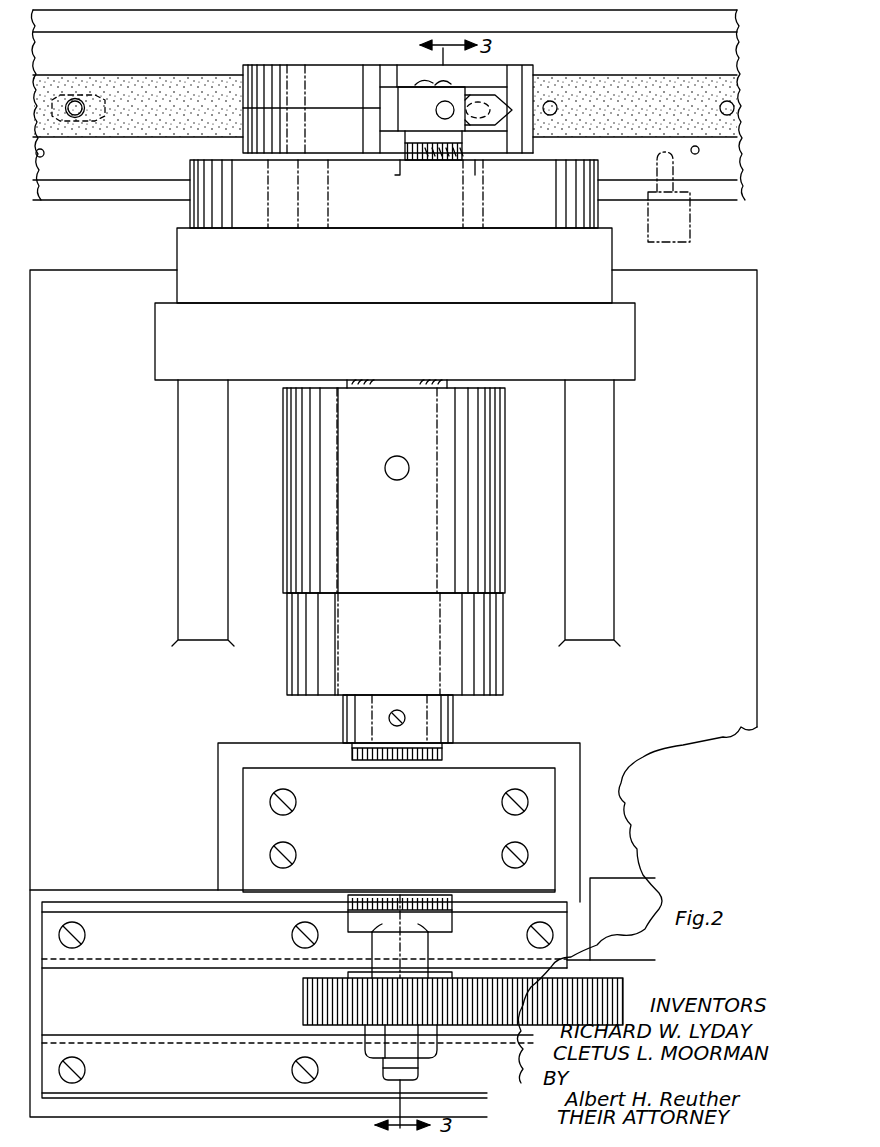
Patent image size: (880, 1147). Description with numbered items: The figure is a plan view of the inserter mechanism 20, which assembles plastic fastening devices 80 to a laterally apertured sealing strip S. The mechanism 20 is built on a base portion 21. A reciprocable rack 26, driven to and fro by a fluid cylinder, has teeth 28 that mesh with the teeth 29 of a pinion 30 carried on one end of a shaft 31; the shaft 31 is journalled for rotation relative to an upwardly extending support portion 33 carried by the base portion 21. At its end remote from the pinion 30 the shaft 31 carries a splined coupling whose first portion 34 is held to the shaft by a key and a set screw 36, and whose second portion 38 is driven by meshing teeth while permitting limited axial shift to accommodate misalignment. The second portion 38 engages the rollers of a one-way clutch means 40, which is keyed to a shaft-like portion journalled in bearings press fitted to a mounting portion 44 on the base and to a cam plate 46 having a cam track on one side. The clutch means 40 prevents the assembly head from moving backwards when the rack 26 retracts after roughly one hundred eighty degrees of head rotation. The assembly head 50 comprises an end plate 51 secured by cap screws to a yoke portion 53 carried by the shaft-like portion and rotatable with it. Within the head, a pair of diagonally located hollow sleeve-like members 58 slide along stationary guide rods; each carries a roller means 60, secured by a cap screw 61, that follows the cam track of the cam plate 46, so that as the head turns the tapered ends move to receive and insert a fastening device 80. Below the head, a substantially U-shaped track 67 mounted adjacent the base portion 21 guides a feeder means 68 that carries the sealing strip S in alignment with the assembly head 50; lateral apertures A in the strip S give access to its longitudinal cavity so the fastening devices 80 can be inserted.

The mechanism 20 is at (730, 750).
The base portion 21 is at (637, 886).
The rack 26 is at (655, 966).
The teeth 28 is at (619, 973).
The teeth 29 is at (303, 1000).
The pinion 30 is at (332, 1025).
The shaft 31 is at (430, 948).
The support portion 33 is at (545, 827).
The first portion 34 is at (453, 719).
The set screw 36 is at (397, 708).
The second portion 38 is at (498, 674).
The one-way clutch means 40 is at (500, 513).
The mounting portion 44 is at (627, 345).
The cam plate 46 is at (190, 220).
The assembly head 50 is at (283, 72).
The end plate 51 is at (315, 70).
The yoke portion 53 is at (333, 146).
The sleeve-like members 58 is at (388, 70).
The roller means 60 is at (432, 162).
The cap screws 61 is at (420, 93).
The U-shaped track 67 is at (728, 197).
The feeder means 68 is at (728, 176).
The fastening devices 80 is at (75, 98).
The apertures A is at (82, 100).
The sealing strip S is at (187, 80).